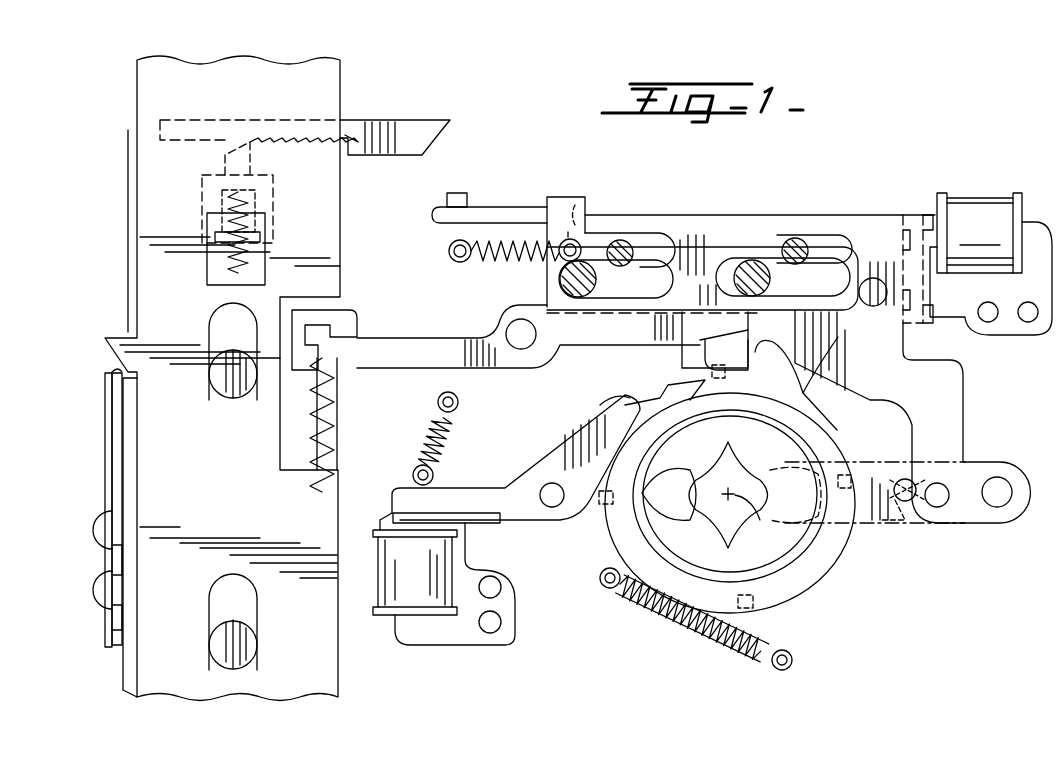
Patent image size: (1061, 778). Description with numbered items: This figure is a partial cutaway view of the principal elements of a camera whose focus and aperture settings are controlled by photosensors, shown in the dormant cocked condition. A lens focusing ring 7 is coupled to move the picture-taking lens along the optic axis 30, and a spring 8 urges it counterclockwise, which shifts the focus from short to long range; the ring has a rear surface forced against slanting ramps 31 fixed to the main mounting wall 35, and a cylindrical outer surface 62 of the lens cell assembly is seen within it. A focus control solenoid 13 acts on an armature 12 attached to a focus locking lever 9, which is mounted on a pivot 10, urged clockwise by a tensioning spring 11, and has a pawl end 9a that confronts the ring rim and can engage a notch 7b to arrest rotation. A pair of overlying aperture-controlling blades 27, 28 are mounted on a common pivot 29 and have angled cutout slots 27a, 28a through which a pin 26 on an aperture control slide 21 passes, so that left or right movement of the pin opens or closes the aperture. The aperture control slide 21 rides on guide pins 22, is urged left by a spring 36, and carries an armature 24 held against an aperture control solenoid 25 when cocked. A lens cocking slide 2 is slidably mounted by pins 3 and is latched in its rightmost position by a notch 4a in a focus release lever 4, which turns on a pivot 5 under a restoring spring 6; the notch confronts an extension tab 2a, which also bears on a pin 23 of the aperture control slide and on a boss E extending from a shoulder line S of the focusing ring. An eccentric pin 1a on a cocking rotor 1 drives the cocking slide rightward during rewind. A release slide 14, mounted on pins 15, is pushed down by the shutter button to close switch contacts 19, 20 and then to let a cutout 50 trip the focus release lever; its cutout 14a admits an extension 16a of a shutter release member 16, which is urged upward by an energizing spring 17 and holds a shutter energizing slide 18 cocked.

The cocking rotor 1 is at (432, 215).
The eccentric pin 1a is at (457, 193).
The lens cocking slide 2 is at (580, 197).
The extension tab 2a is at (703, 350).
The pins 3 is at (560, 279).
The focus release lever 4 is at (462, 338).
The notch 4a is at (742, 316).
The pivot 5 is at (521, 342).
The restoring spring 6 is at (338, 405).
The lens focusing ring 7 is at (842, 570).
The notch 7b is at (650, 395).
The spring 8 is at (690, 628).
The focus locking lever 9 is at (520, 490).
The pawl end 9a is at (618, 395).
The pivot 10 is at (550, 507).
The tensioning spring 11 is at (455, 430).
The armature 12 is at (400, 518).
The focus control solenoid 13 is at (400, 595).
The release slide 14 is at (337, 257).
The cutout 14a is at (205, 270).
The pins 15 is at (225, 380).
The shutter release member 16 is at (273, 190).
The extension 16a is at (255, 220).
The energizing spring 17 is at (250, 258).
The shutter energizing slide 18 is at (400, 118).
The switch contact 19 is at (104, 462).
The switch contact 20 is at (104, 420).
The aperture control slide 21 is at (737, 232).
The guide pins 22 is at (622, 240).
The pin 23 is at (875, 278).
The armature 24 is at (920, 215).
The aperture control solenoid 25 is at (985, 220).
The pin 26 is at (937, 507).
The aperture-controlling blade 27 is at (715, 455).
The cutout slot 27a is at (895, 482).
The aperture-controlling blade 28 is at (719, 505).
The cutout slot 28a is at (900, 530).
The common pivot 29 is at (1012, 492).
The optic axis 30 is at (760, 520).
The slanting ramps 31 is at (600, 500).
The main mounting wall 35 is at (122, 688).
The spring 36 is at (487, 265).
The cutout 50 is at (280, 440).
The cylindrical outer surface 62 is at (820, 540).
The boss E is at (770, 335).
The shoulder line S is at (838, 337).